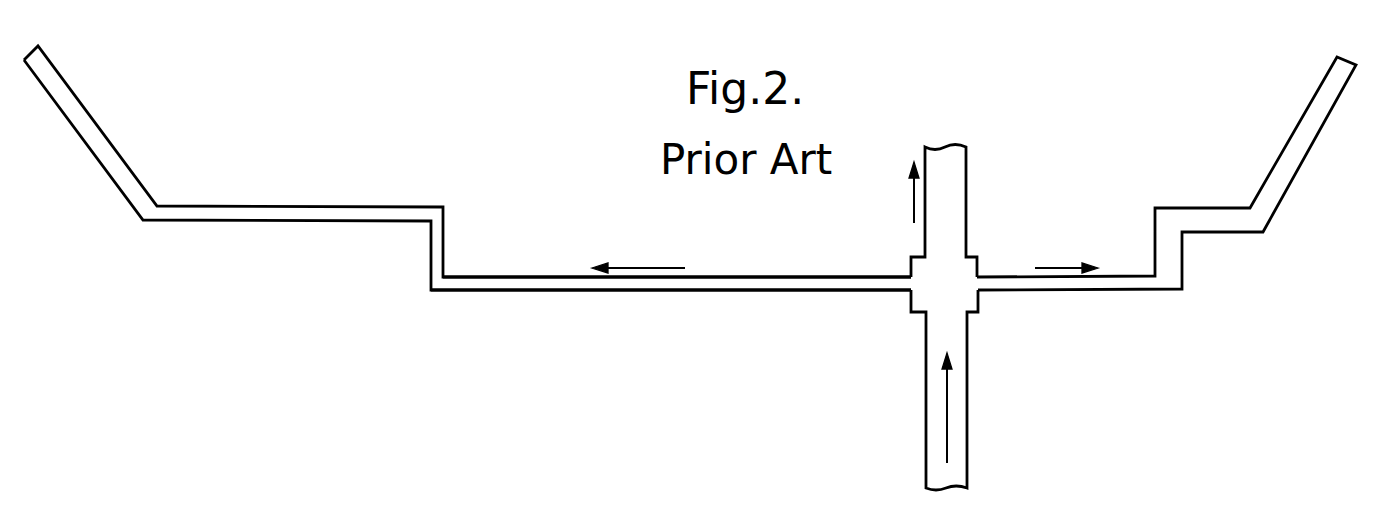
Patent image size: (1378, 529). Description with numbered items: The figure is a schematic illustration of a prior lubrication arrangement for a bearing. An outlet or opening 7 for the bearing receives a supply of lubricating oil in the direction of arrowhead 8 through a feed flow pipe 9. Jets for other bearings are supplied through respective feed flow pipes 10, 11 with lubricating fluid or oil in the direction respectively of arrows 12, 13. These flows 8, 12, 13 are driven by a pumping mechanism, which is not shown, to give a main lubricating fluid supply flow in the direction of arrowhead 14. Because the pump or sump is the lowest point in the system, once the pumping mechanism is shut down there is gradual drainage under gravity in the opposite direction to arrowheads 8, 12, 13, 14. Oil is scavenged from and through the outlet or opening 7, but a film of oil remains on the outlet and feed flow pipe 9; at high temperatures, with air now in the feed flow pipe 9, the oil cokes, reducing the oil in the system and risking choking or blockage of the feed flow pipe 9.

The outlet or opening 7 is at (55, 70).
The arrowhead 8 is at (646, 265).
The feed flow pipe 9 is at (521, 284).
The feed flow pipe 10 is at (953, 174).
The feed flow pipe 11 is at (1231, 222).
The arrow 12 is at (914, 196).
The arrow 13 is at (1057, 266).
The arrowhead 14 is at (947, 409).